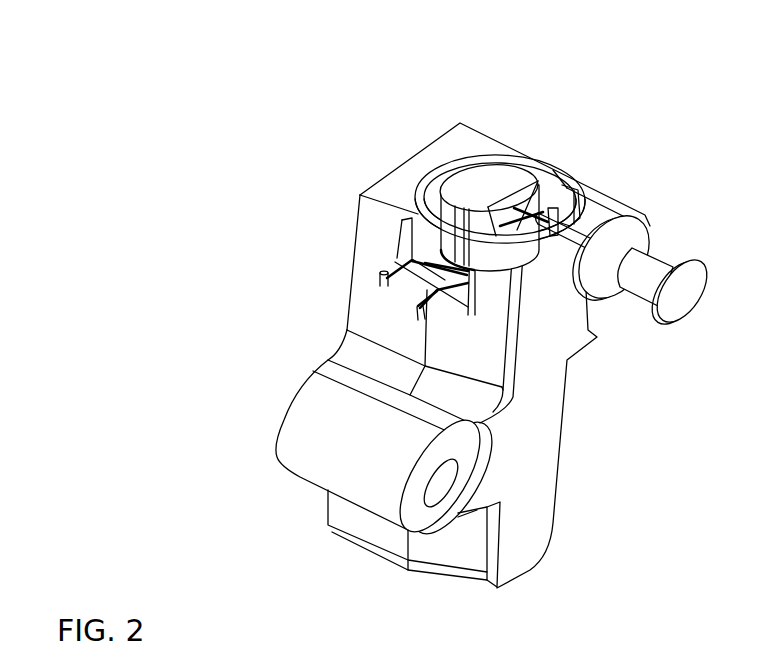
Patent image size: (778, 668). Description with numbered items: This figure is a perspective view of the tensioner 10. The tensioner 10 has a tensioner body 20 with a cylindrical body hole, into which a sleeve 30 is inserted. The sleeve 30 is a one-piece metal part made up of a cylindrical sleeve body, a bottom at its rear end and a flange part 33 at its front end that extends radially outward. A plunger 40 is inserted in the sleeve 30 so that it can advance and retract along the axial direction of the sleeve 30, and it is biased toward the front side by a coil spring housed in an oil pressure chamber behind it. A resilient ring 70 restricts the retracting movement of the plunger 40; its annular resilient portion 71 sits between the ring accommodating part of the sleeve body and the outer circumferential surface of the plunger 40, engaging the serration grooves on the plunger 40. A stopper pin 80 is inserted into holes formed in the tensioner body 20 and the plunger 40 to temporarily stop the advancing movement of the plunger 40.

The tensioner 10 is at (272, 87).
The tensioner body 20 is at (540, 461).
The sleeve 30 is at (433, 128).
The flange part 33 is at (420, 210).
The plunger 40 is at (492, 182).
The resilient ring 70 is at (393, 277).
The annular resilient portion 71 is at (427, 298).
The stopper pin 80 is at (650, 270).